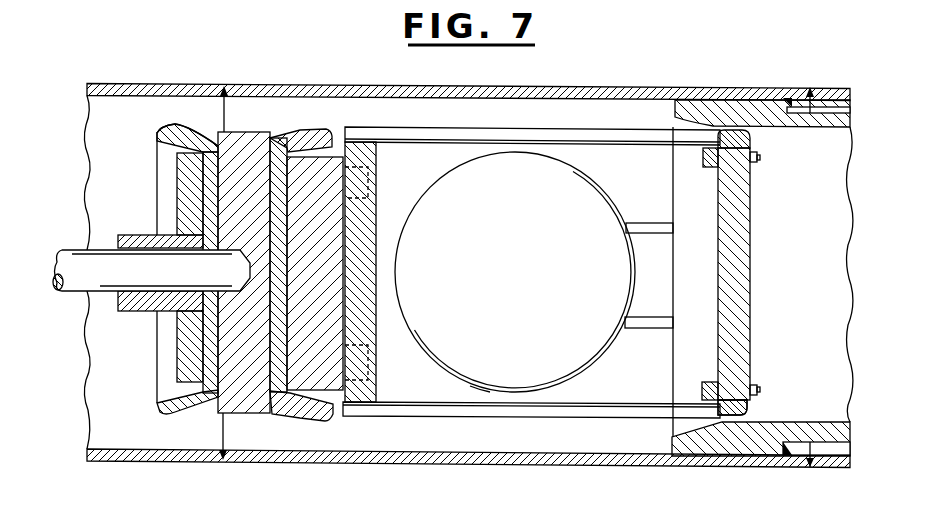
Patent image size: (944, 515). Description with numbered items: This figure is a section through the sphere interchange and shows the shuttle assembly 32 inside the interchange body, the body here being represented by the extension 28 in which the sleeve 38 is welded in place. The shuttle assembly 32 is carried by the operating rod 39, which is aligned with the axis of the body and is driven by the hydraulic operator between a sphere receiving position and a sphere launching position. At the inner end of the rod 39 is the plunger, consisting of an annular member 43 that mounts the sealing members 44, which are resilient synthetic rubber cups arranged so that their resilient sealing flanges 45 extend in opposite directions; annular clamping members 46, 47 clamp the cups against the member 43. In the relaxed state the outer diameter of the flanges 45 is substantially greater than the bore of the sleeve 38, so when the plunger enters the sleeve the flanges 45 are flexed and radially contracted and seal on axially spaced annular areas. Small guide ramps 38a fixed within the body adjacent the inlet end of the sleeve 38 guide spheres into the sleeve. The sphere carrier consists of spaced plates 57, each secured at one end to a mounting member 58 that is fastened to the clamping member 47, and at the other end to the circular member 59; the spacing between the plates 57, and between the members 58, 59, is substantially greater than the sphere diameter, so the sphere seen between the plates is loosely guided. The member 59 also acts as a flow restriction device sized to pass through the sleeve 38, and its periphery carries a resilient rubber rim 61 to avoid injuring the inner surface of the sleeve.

The extension 28 is at (140, 84).
The shuttle assembly 32 is at (206, 104).
The sleeve 38 is at (708, 103).
The guide ramps 38a is at (645, 222).
The operating rod 39 is at (68, 248).
The annular member 43 is at (275, 383).
The sealing members 44 is at (208, 373).
The resilient sealing flanges 45 is at (318, 130).
The annular clamping member 46 is at (180, 337).
The annular clamping member 47 is at (327, 368).
The spaced plates 57 is at (480, 127).
The mounting member 58 is at (383, 200).
The member 59 is at (757, 238).
The rim 61 is at (748, 411).